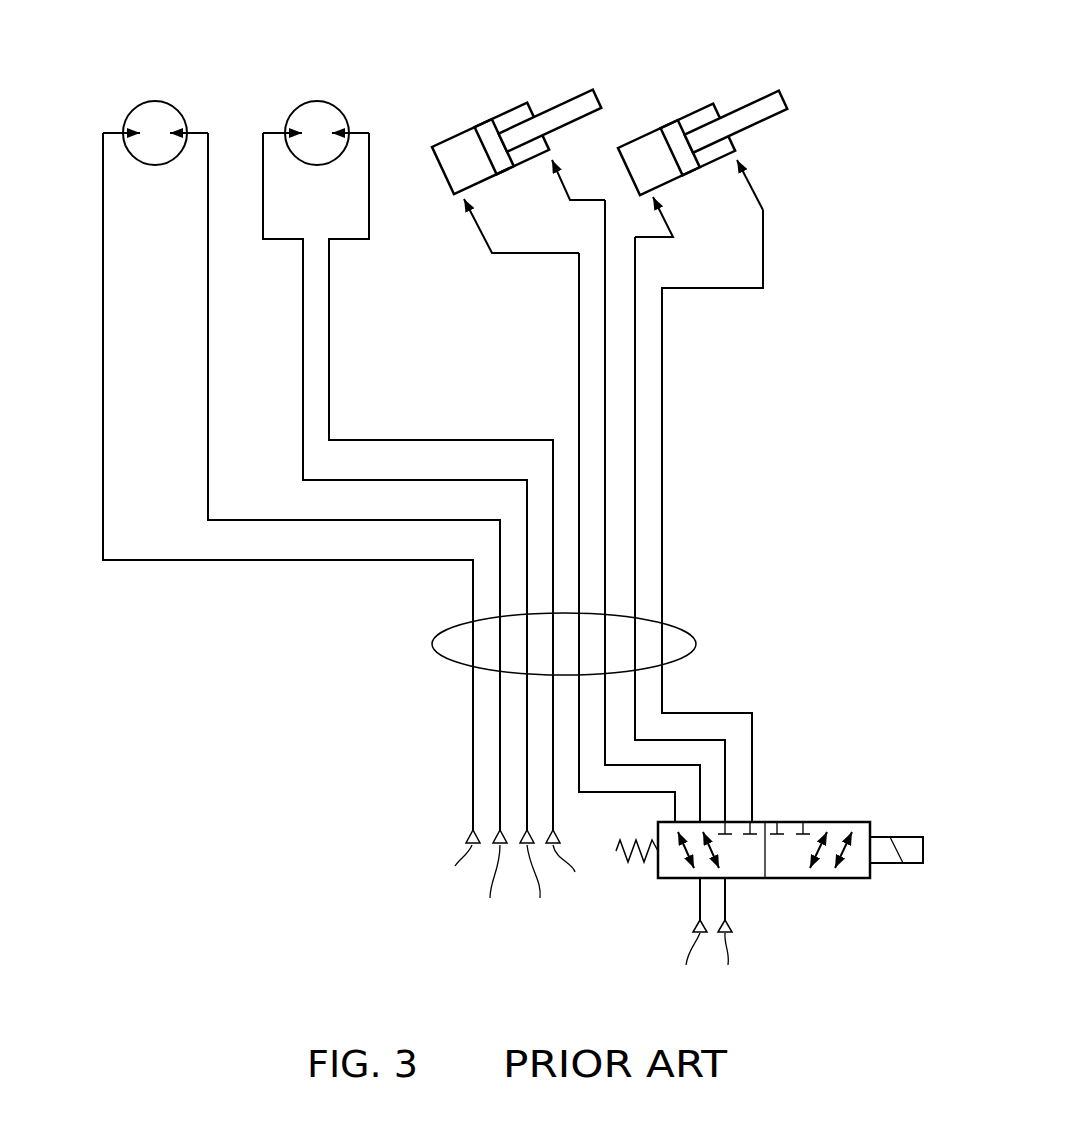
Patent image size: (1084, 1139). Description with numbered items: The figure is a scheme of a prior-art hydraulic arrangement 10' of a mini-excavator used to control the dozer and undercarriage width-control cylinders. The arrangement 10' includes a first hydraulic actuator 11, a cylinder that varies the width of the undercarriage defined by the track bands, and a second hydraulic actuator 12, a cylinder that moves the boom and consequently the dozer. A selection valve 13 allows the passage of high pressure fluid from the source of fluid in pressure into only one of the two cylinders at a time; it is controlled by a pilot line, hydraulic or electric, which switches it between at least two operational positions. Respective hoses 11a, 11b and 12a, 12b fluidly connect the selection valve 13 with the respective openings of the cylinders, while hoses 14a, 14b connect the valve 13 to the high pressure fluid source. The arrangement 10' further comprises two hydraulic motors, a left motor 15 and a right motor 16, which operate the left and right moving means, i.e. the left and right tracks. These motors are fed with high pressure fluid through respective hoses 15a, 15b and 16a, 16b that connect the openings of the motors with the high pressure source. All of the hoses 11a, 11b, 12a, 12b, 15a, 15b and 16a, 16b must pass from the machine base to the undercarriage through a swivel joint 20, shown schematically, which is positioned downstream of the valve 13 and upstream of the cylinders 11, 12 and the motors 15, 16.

The hydraulic arrangement 10' is at (502, 505).
The first hydraulic actuator 11 is at (643, 133).
The hose 11a is at (636, 315).
The hose 11b is at (662, 360).
The second hydraulic actuator 12 is at (498, 110).
The hose 12a is at (579, 345).
The hose 12b is at (603, 307).
The selection valve 13 is at (800, 798).
The hose 14a is at (700, 902).
The hose 14b is at (725, 902).
The left motor 15 is at (335, 92).
The hose 15a is at (303, 393).
The hose 15b is at (329, 395).
The right motor 16 is at (165, 92).
The hose 16a is at (103, 395).
The hose 16b is at (208, 398).
The swivel joint 20 is at (678, 643).